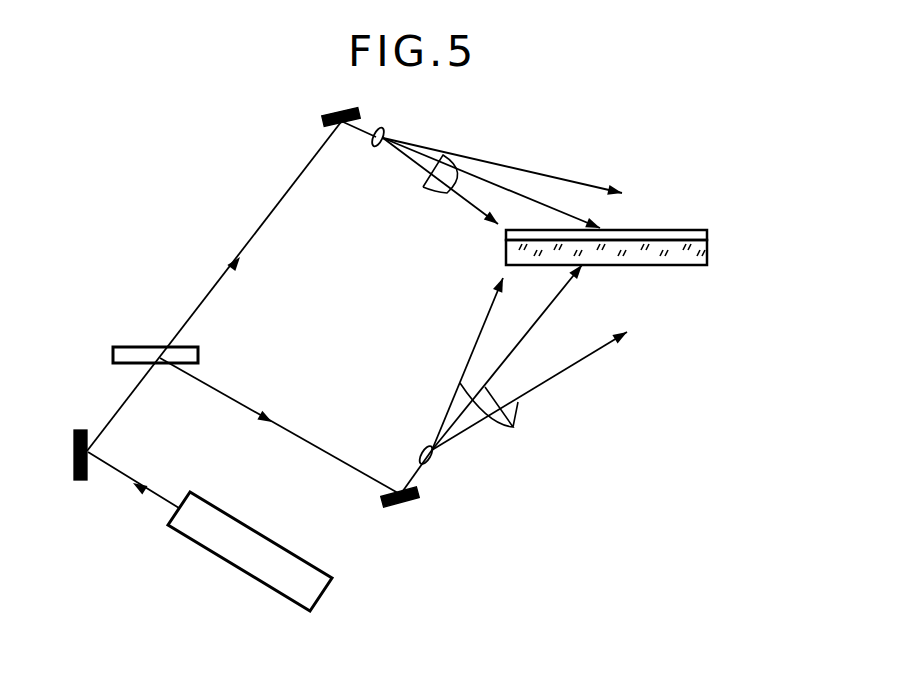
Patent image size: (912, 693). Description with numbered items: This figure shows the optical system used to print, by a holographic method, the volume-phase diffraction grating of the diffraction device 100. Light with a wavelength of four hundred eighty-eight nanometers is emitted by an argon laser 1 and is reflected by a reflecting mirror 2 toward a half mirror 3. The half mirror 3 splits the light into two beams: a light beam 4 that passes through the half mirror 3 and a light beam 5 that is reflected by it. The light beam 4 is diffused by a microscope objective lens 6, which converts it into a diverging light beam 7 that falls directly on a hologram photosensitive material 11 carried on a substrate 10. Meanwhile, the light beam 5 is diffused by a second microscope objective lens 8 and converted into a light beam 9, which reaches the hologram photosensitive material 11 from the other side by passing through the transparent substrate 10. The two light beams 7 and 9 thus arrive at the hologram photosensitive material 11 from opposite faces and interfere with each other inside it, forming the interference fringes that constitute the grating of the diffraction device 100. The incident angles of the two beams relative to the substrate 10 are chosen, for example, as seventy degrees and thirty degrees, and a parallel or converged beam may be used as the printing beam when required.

The argon laser 1 is at (303, 567).
The reflecting mirror 2 is at (80, 480).
The half mirror 3 is at (135, 353).
The light beam 4 is at (202, 300).
The light beam 5 is at (250, 400).
The microscope objective lens 6 is at (376, 148).
The light beam 7 is at (431, 187).
The microscope objective lens 8 is at (430, 462).
The light beam 9 is at (497, 424).
The substrate 10 is at (707, 260).
The hologram photosensitive material 11 is at (707, 235).
The diffraction device 100 is at (671, 249).